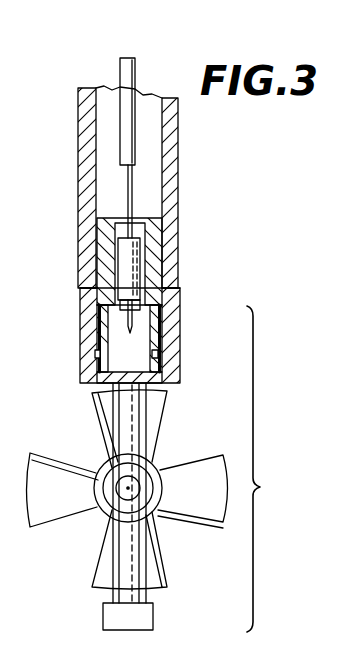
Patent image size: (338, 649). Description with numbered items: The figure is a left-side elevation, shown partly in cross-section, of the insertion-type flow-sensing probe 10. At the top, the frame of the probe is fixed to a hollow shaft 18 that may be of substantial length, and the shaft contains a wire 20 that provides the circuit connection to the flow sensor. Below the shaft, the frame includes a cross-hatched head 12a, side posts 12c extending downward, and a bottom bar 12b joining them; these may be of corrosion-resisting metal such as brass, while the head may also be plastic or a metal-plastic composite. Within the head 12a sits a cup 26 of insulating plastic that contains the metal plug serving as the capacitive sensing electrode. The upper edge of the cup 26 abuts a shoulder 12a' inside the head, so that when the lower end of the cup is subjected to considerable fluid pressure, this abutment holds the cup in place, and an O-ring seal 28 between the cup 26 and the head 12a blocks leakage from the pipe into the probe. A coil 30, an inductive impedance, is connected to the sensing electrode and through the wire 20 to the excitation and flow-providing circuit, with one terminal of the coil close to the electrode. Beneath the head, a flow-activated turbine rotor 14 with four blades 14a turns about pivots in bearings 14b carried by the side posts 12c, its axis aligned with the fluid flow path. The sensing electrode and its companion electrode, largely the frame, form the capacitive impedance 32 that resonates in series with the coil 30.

The flow-sensing probe 10 is at (62, 126).
The head 12a is at (179, 277).
The shoulder 12a' is at (199, 302).
The bottom bar 12b is at (108, 612).
The side posts 12c is at (125, 540).
The turbine rotor 14 is at (128, 491).
The blades 14a is at (200, 467).
The bearings 14b is at (113, 480).
The hollow shaft 18 is at (83, 172).
The wire 20 is at (125, 72).
The cup 26 is at (100, 328).
The O-ring seal 28 is at (152, 352).
The coil 30 is at (122, 267).
The capacitive impedance 32 is at (271, 469).